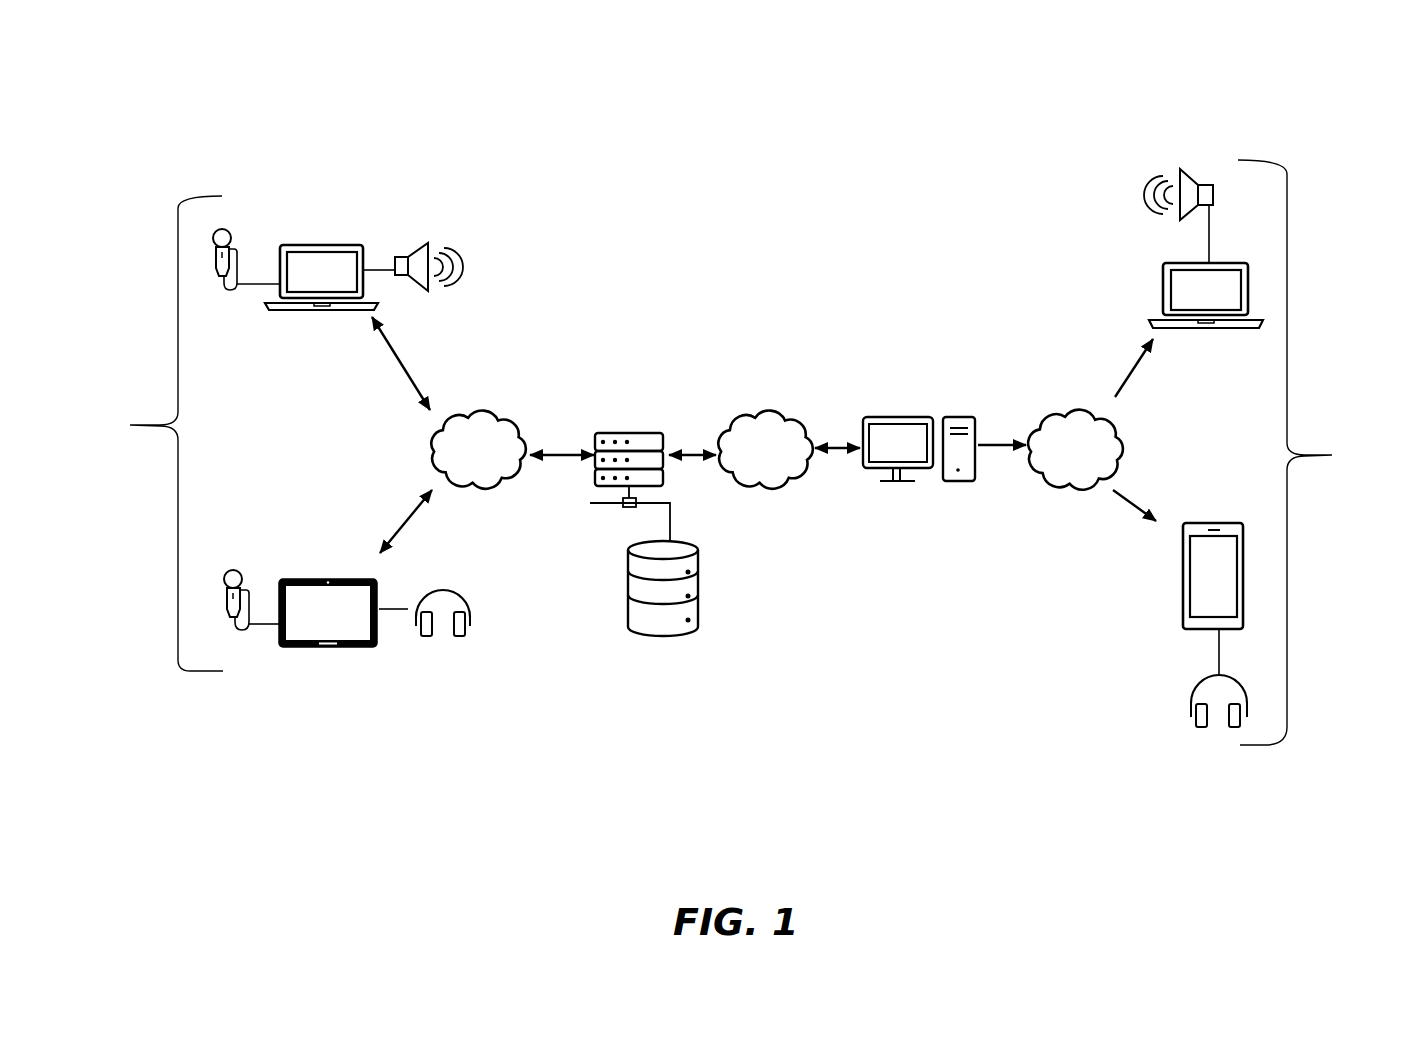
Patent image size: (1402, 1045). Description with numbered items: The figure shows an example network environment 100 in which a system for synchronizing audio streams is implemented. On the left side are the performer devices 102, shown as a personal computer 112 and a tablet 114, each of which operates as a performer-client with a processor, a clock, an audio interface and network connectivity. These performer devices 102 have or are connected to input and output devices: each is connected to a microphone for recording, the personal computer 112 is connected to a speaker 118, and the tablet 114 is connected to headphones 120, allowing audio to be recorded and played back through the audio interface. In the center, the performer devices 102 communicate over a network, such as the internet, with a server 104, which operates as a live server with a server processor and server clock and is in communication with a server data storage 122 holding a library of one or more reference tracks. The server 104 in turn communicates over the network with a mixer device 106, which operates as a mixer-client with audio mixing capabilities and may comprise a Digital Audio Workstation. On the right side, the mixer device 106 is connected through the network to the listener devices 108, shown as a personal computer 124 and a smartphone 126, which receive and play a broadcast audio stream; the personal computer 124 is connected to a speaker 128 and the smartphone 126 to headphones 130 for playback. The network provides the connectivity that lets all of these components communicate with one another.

The network environment 100 is at (219, 125).
The performer devices 102 is at (147, 433).
The server 104 is at (629, 442).
The mixer device 106 is at (888, 483).
The listener devices 108 is at (1318, 452).
The personal computer 112 is at (322, 260).
The tablet 114 is at (328, 612).
The speaker 118 is at (420, 260).
The headphones 120 is at (450, 585).
The server data storage 122 is at (672, 625).
The personal computer 124 is at (1192, 293).
The smartphone 126 is at (1192, 576).
The speaker 128 is at (1183, 168).
The headphones 130 is at (1190, 720).